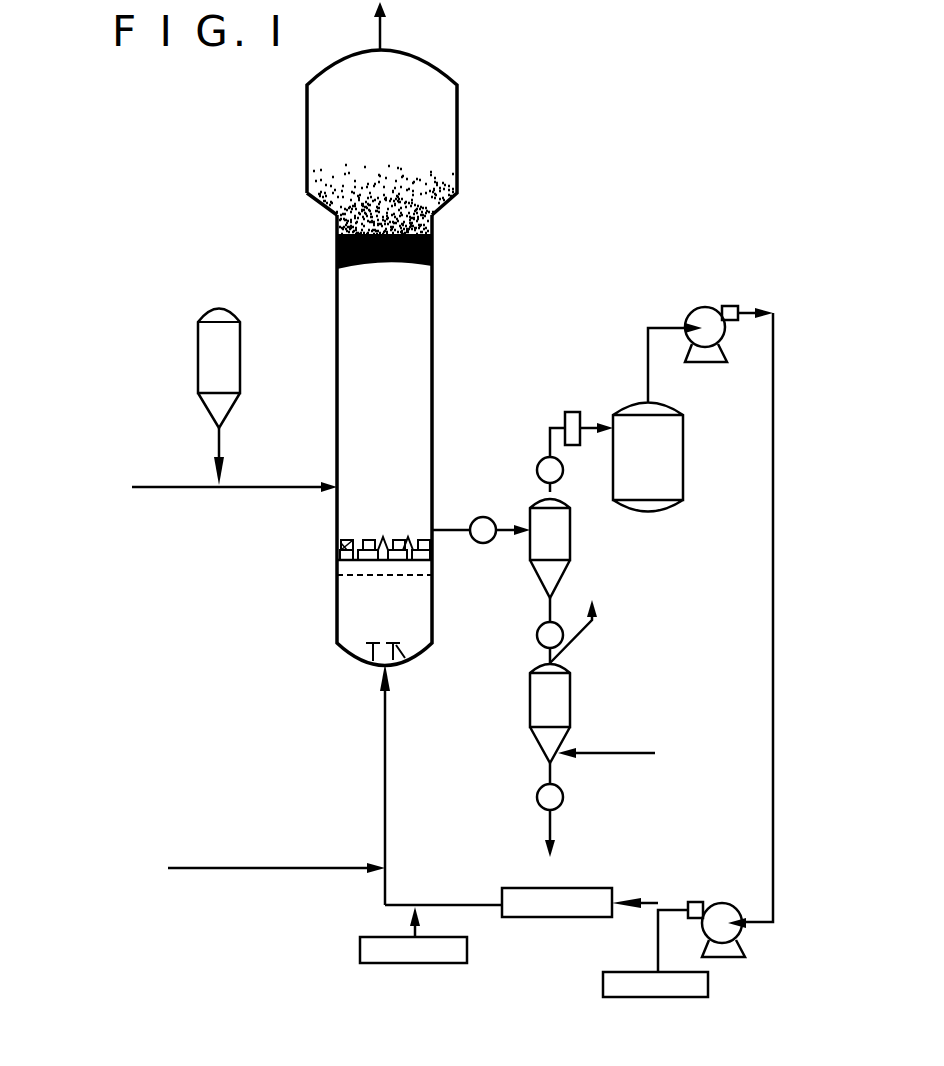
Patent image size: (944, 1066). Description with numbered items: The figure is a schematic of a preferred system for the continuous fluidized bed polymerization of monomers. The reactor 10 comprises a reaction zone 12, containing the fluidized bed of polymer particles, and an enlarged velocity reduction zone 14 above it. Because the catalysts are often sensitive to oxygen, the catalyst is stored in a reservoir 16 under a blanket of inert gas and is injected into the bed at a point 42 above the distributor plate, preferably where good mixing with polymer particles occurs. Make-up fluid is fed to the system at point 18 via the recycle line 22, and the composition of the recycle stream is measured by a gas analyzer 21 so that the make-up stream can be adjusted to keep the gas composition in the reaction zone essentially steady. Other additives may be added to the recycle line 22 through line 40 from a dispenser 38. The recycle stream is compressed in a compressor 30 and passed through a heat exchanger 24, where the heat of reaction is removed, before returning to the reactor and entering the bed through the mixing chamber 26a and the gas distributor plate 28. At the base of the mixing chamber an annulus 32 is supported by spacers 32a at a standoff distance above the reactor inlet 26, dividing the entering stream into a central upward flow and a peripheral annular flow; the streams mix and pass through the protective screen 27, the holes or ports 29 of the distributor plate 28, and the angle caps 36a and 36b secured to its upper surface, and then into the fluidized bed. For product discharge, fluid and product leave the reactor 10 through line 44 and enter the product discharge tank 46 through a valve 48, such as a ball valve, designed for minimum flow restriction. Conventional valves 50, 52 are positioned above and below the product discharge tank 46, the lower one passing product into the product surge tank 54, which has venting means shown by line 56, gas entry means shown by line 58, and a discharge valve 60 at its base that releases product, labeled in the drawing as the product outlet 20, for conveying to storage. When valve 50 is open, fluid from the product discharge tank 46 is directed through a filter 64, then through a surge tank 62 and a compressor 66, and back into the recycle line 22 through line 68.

The reactor 10 is at (432, 340).
The reaction zone 12 is at (390, 425).
The velocity reduction zone 14 is at (443, 133).
The reservoir 16 is at (198, 328).
The make-up fluid feed point 18 is at (383, 864).
The product line 20 is at (548, 856).
The gas analyzer 21 is at (626, 972).
The recycle line 22 is at (773, 228).
The heat exchanger 24 is at (540, 887).
The reactor inlet 26 is at (380, 665).
The mixing chamber 26a is at (362, 625).
The protective screen 27 is at (417, 575).
The gas distributor plate 28 is at (337, 563).
The holes or ports 29 is at (383, 556).
The compressor 30 is at (738, 938).
The annulus 32 is at (402, 652).
The spacers 32a is at (347, 652).
The angle cap 36a is at (353, 546).
The angle cap 36b is at (394, 540).
The dispenser 38 is at (465, 949).
The line 40 is at (417, 935).
The catalyst injection point 42 is at (337, 484).
The line 44 is at (449, 530).
The product discharge tank 46 is at (571, 553).
The valve 48 is at (473, 520).
The valve 50 is at (563, 471).
The valve 52 is at (537, 633).
The product surge tank 54 is at (530, 697).
The venting line 56 is at (576, 646).
The gas entry line 58 is at (615, 752).
The discharge valve 60 is at (540, 787).
The surge tank 62 is at (683, 447).
The filter 64 is at (565, 418).
The compressor 66 is at (694, 309).
The line 68 is at (740, 307).